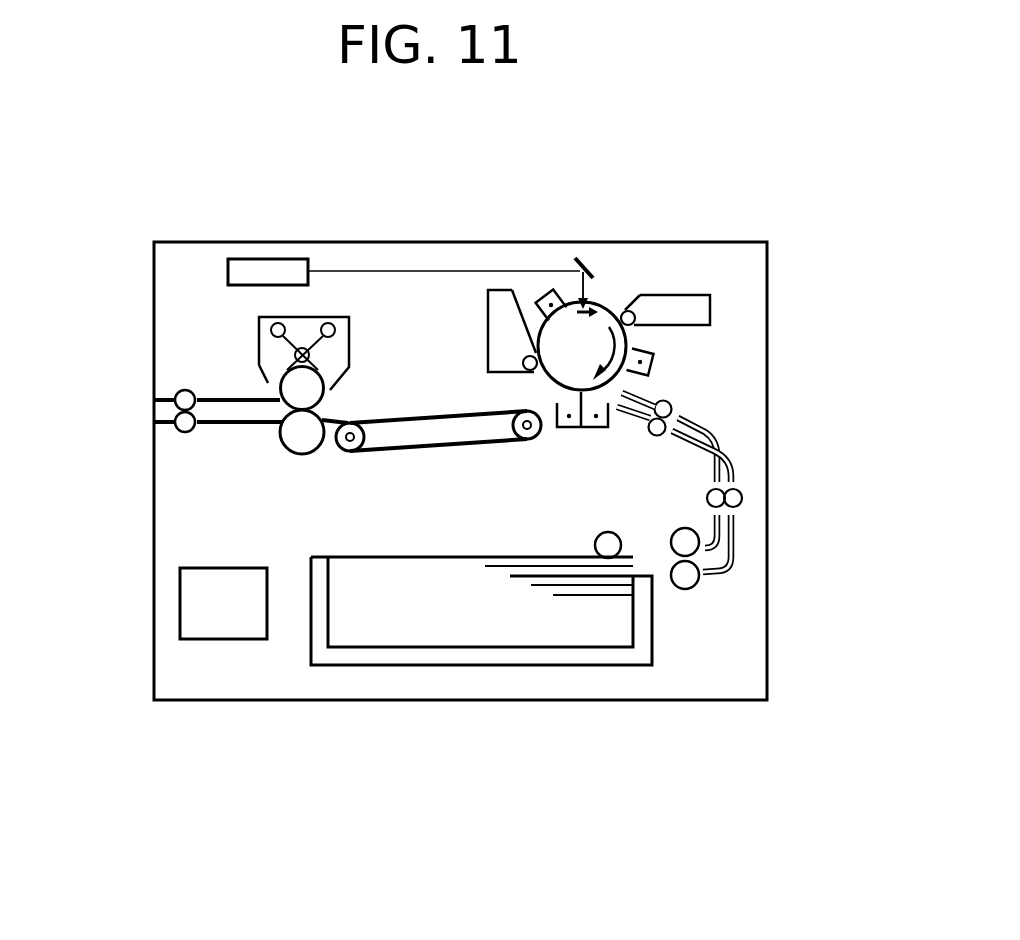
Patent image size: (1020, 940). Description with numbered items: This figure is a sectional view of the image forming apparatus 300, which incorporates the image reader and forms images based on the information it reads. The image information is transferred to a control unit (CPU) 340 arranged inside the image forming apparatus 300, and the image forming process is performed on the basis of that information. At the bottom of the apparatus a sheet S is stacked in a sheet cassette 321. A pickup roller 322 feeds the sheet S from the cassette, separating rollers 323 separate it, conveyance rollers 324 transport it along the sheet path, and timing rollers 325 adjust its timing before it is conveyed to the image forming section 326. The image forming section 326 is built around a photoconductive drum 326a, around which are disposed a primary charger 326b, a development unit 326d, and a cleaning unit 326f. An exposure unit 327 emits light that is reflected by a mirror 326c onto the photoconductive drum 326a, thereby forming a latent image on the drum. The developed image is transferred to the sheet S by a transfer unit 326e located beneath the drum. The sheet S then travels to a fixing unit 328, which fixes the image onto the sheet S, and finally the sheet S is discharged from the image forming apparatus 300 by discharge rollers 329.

The image forming apparatus 300 is at (140, 581).
The sheet cassette 321 is at (513, 658).
The pickup roller 322 is at (607, 548).
The separating rollers 323 is at (690, 575).
The conveyance rollers 324 is at (744, 496).
The timing rollers 325 is at (655, 431).
The image forming section 326 is at (672, 286).
The photoconductive drum 326a is at (603, 318).
The primary charger 326b is at (537, 304).
The mirror 326c is at (607, 270).
The development unit 326d is at (700, 310).
The transfer unit 326e is at (592, 428).
The cleaning unit 326f is at (498, 345).
The exposure unit 327 is at (270, 268).
The fixing unit 328 is at (292, 380).
The discharge rollers 329 is at (187, 432).
The control unit (CPU) 340 is at (230, 632).
The sheet S is at (413, 557).